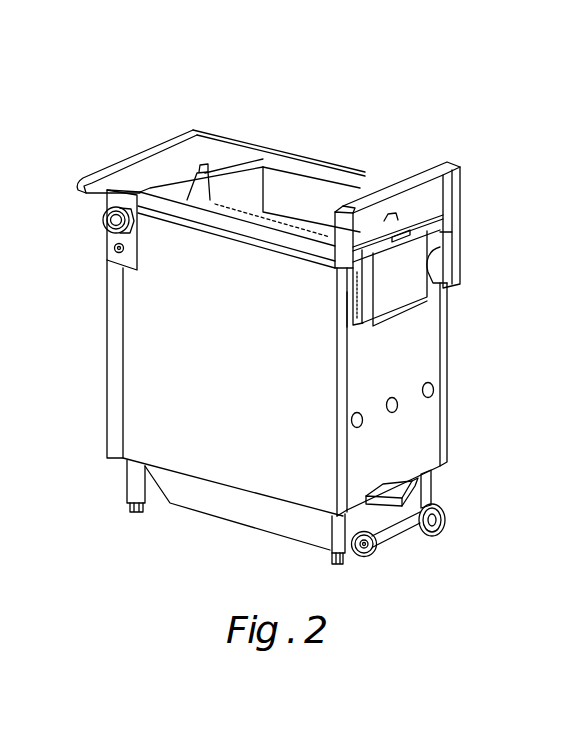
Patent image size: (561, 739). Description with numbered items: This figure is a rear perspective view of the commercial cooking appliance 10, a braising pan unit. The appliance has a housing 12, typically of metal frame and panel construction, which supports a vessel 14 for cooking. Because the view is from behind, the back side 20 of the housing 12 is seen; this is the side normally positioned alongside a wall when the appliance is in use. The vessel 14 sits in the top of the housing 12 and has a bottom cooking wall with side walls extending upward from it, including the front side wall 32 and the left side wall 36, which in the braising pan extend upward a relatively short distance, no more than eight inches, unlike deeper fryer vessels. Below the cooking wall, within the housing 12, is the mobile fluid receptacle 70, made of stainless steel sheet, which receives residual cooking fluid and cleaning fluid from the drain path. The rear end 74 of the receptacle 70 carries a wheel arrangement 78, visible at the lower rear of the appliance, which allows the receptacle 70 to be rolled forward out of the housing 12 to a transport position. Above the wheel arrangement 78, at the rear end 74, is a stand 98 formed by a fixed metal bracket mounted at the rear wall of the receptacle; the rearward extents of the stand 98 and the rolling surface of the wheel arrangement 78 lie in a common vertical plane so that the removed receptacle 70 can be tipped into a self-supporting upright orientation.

The commercial cooking appliance 10 is at (283, 297).
The housing 12 is at (273, 377).
The vessel 14 is at (315, 208).
The back side 20 is at (422, 323).
The front side wall 32 is at (248, 187).
The left side wall 36 is at (288, 197).
The mobile fluid receptacle 70 is at (207, 497).
The rear end 74 is at (423, 498).
The wheel arrangement 78 is at (443, 526).
The stand 98 is at (445, 463).